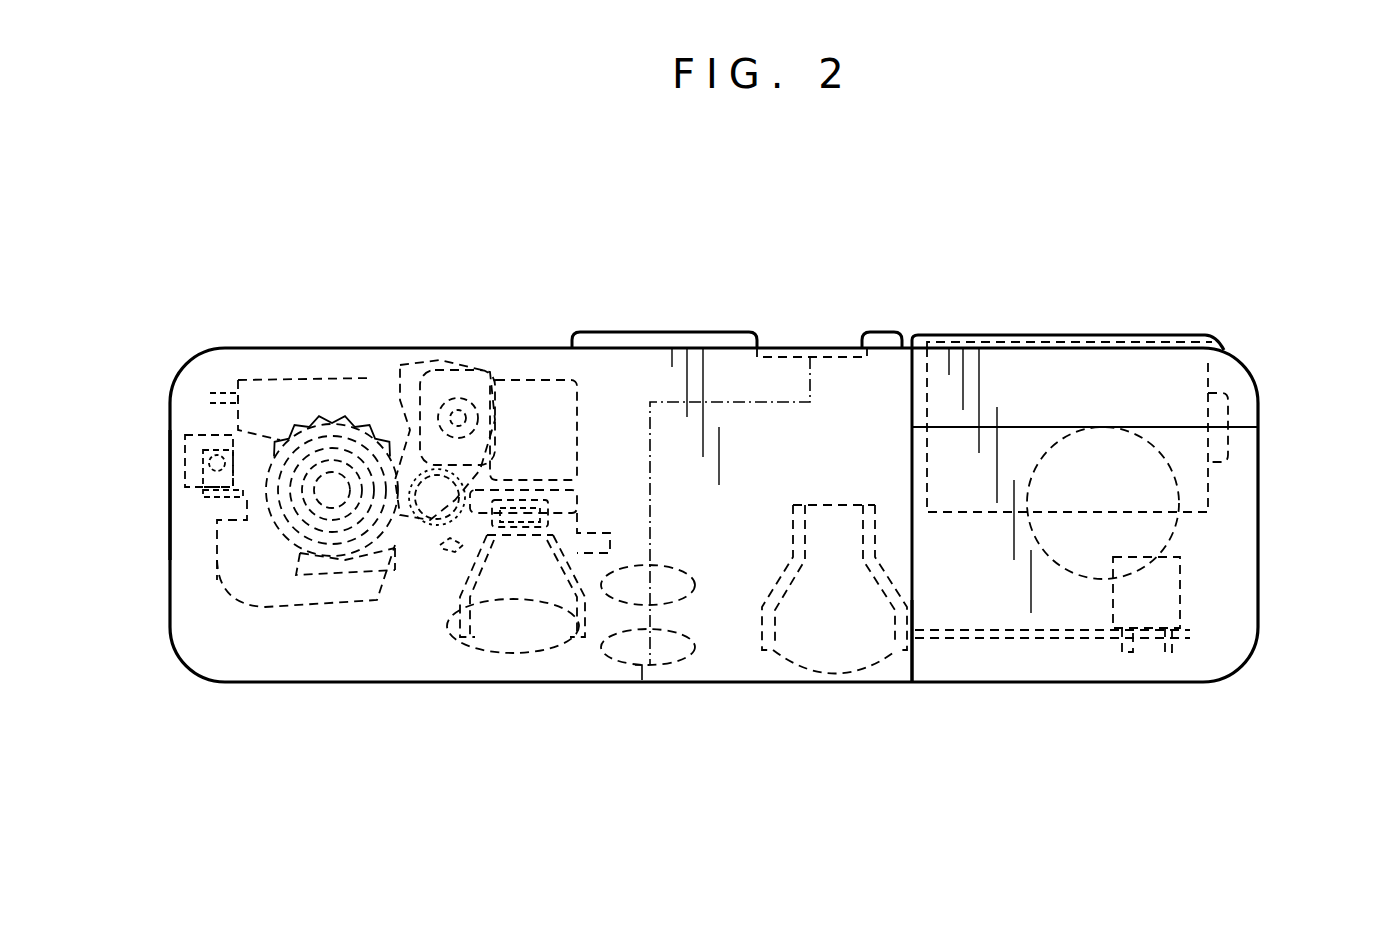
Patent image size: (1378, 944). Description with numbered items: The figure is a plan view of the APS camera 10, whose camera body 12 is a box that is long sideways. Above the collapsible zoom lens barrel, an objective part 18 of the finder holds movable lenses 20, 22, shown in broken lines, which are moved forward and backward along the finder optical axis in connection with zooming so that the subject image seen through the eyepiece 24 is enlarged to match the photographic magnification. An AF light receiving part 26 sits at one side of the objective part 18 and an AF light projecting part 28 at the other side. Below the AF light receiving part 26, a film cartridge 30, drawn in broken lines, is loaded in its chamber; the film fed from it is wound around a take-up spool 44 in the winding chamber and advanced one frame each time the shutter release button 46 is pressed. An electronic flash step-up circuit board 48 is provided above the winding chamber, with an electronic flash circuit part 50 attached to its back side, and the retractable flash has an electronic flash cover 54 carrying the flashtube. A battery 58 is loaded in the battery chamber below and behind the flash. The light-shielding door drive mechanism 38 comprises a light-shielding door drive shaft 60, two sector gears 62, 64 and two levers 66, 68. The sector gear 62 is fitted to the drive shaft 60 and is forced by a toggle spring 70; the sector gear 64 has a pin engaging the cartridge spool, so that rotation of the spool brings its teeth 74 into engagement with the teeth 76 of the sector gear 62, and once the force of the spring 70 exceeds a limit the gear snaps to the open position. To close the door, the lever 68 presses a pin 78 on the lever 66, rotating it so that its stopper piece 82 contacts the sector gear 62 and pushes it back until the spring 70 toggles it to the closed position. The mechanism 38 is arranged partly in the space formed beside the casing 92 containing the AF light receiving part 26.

The camera 10 is at (290, 221).
The camera body 12 is at (495, 348).
The objective part 18 is at (690, 668).
The movable lens 20 is at (641, 668).
The movable lens 22 is at (687, 572).
The eyepiece 24 is at (812, 348).
The AF light receiving part 26 is at (477, 640).
The AF light projecting part 28 is at (873, 668).
The film cartridge 30 is at (327, 550).
The light-shielding door drive mechanism 38 is at (456, 364).
The take-up spool 44 is at (1180, 527).
The shutter release button 46 is at (170, 497).
The electronic flash step-up circuit board 48 is at (1050, 660).
The electronic flash circuit part 50 is at (1180, 583).
The electronic flash cover 54 is at (985, 668).
The battery 58 is at (1230, 455).
The light-shielding door drive shaft 60 is at (480, 440).
The sector gear 62 is at (477, 365).
The sector gear 64 is at (300, 560).
The lever 66 is at (217, 560).
The lever 68 is at (185, 453).
The spring 70 is at (415, 420).
The teeth 74 is at (290, 428).
The teeth 76 is at (410, 535).
The pin 78 is at (203, 472).
The stopper piece 82 is at (556, 622).
The casing 92 is at (452, 552).